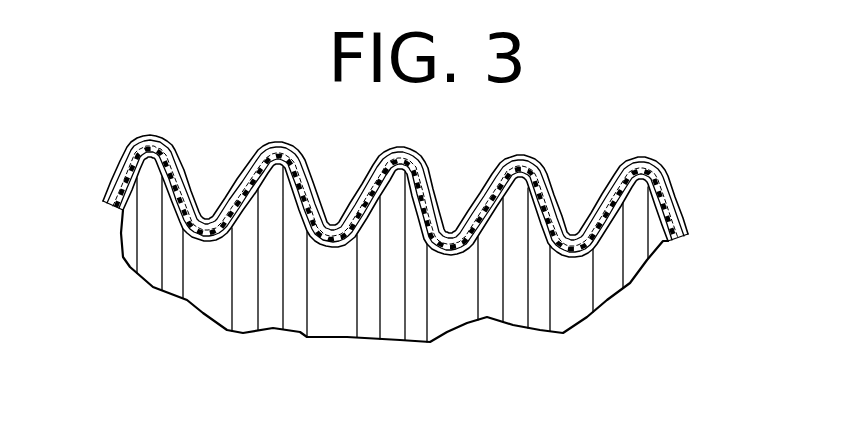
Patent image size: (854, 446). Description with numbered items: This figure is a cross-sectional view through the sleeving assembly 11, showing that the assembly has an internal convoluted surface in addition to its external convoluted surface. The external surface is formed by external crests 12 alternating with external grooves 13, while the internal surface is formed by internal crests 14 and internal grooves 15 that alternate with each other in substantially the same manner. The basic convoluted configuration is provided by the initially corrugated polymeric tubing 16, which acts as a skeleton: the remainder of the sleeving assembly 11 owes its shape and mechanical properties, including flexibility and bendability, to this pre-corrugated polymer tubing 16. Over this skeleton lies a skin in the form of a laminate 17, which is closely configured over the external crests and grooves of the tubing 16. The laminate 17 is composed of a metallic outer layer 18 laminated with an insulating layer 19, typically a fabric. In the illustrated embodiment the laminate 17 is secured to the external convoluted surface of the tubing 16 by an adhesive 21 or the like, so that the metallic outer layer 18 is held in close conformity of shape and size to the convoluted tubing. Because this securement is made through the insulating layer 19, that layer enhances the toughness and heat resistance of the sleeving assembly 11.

The sleeving assembly 11 is at (104, 167).
The external crests 12 is at (147, 135).
The external grooves 13 is at (207, 218).
The internal crests 14 is at (332, 247).
The internal grooves 15 is at (277, 165).
The corrugated polymeric tubing 16 is at (460, 254).
The laminate 17 is at (284, 141).
The metallic outer layer 18 is at (413, 150).
The insulating layer 19 is at (109, 201).
The adhesive 21 is at (674, 233).